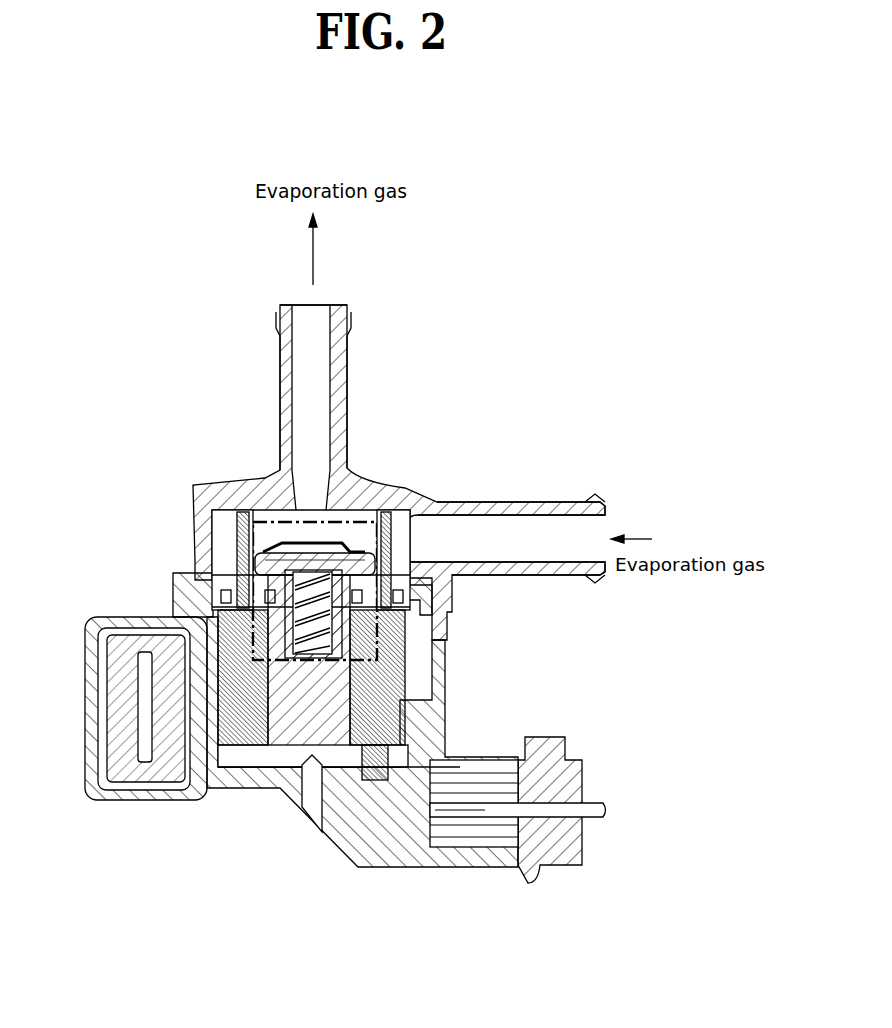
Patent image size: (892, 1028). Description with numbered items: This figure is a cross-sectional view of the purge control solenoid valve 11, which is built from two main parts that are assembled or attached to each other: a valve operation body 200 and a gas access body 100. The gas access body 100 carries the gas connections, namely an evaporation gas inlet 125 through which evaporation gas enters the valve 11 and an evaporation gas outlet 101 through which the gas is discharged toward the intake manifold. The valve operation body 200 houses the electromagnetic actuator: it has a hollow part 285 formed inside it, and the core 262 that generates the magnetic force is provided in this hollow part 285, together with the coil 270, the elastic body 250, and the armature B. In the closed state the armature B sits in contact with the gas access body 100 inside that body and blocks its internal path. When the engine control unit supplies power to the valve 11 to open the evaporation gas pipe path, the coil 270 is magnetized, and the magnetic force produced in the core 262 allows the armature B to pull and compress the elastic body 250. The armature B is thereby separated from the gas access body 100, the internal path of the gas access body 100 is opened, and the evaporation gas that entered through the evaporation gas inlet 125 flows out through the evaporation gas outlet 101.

The valve 11 is at (446, 392).
The gas access body 100 is at (70, 300).
The evaporation gas outlet 101 is at (278, 472).
The evaporation gas inlet 125 is at (607, 526).
The armature B is at (337, 520).
The valve operation body 200 is at (70, 548).
The elastic body 250 is at (350, 690).
The core 262 is at (283, 792).
The coil 270 is at (190, 617).
The hollow part 285 is at (375, 755).